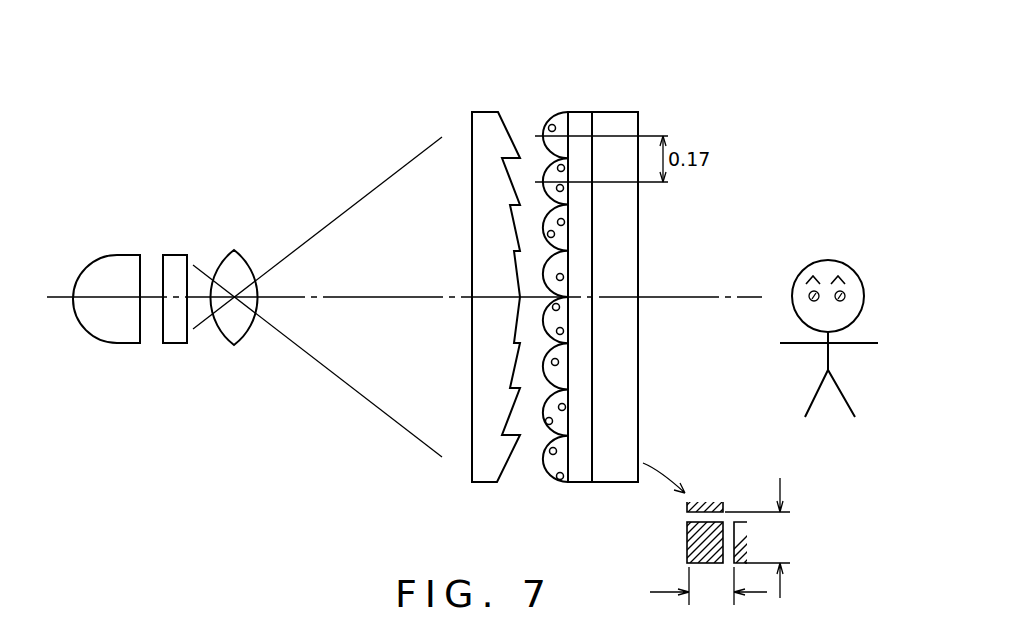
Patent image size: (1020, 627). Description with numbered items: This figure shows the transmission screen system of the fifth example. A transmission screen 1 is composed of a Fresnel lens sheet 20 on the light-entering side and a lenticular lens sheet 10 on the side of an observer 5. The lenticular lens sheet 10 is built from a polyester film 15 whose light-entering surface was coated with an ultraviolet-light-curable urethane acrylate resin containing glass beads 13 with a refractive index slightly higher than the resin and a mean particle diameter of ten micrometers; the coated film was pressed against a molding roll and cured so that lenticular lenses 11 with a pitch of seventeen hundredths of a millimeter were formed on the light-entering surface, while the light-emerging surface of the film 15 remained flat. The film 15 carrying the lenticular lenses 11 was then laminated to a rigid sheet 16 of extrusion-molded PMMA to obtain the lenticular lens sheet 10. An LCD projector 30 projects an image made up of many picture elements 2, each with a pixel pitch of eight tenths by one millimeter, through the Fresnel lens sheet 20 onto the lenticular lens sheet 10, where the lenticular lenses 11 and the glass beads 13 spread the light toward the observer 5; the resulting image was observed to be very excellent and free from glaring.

The transmission screen 1 is at (527, 63).
The pixel element 2 is at (707, 527).
The observer 5 is at (863, 283).
The lenticular lens sheet 10 is at (605, 112).
The lenticular lenses 11 is at (550, 410).
The glass beads 13 is at (553, 451).
The polyester film 15 is at (580, 366).
The rigid sheet 16 is at (627, 407).
The Fresnel lens sheet 20 is at (486, 112).
The LCD projector 30 is at (244, 218).